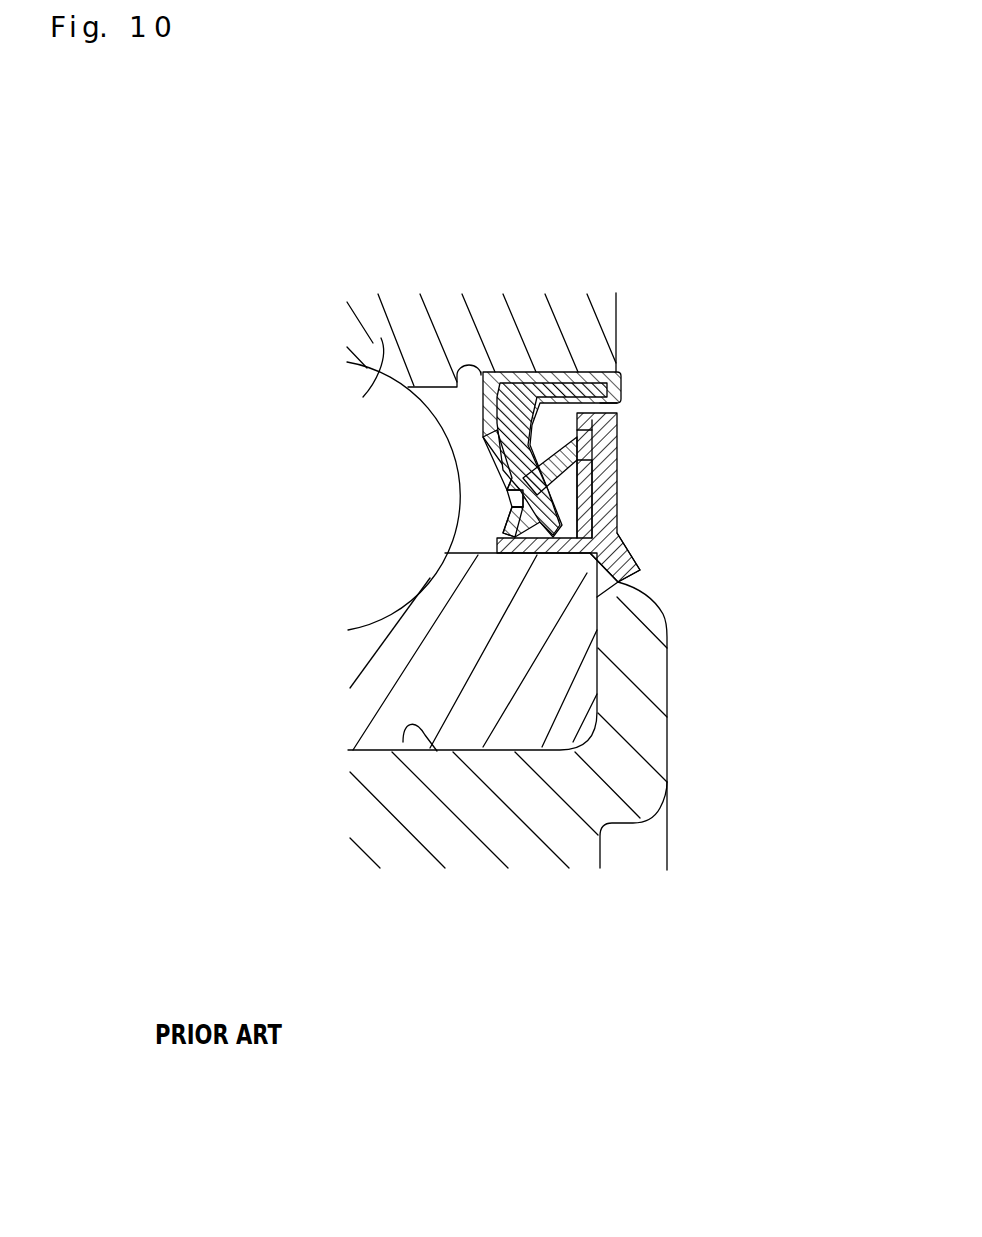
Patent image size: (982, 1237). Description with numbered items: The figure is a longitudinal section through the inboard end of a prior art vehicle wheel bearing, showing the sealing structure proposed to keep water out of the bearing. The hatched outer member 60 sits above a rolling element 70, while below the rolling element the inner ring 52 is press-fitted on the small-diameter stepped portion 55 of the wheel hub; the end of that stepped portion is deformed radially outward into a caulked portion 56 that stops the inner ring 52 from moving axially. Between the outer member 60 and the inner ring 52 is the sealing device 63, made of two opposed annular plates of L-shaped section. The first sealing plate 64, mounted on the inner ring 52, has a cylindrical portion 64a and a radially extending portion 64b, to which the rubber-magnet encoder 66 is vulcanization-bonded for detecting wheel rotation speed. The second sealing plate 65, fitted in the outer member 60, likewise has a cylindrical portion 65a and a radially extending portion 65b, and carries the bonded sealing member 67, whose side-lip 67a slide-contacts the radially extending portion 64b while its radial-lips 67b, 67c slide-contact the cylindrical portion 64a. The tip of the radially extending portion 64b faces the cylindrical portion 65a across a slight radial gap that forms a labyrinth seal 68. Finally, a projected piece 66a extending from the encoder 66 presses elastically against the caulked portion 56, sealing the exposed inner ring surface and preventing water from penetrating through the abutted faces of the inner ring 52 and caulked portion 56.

The rolling elements 70 is at (381, 338).
The outer member 60 is at (337, 331).
The inner ring 52 is at (337, 683).
The stepped portion 55 is at (403, 742).
The caulked portion 56 is at (645, 678).
The sealing device 63 is at (652, 533).
The second annular sealing plate 65 is at (648, 419).
The cylindrical portion 65a is at (503, 372).
The radially extending portion 65b is at (478, 371).
The labyrinth seal 68 is at (617, 412).
The encoder 66 is at (623, 497).
The projected piece 66a is at (635, 562).
The first annular sealing plate 64 is at (655, 487).
The cylindrical portion 64a is at (617, 513).
The radially extending portion 64b is at (617, 478).
The sealing member 67 is at (361, 502).
The side-lip 67a is at (503, 450).
The radial-lip 67b is at (503, 483).
The radial-lip 67c is at (503, 530).